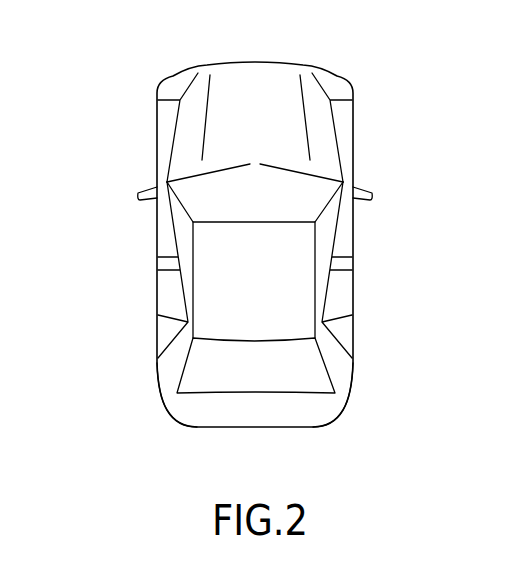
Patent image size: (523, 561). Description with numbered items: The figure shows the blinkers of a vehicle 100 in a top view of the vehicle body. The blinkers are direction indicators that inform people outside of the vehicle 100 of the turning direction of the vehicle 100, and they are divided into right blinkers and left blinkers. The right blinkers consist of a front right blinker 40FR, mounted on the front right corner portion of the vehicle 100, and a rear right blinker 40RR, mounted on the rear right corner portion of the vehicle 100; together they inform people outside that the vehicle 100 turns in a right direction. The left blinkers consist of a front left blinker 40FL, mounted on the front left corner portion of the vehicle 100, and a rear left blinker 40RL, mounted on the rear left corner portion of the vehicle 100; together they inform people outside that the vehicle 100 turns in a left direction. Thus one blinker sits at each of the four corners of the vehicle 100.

The vehicle 100 is at (159, 283).
The front left blinker 40FL is at (170, 75).
The front right blinker 40FR is at (342, 75).
The rear left blinker 40RL is at (170, 412).
The rear right blinker 40RR is at (343, 412).